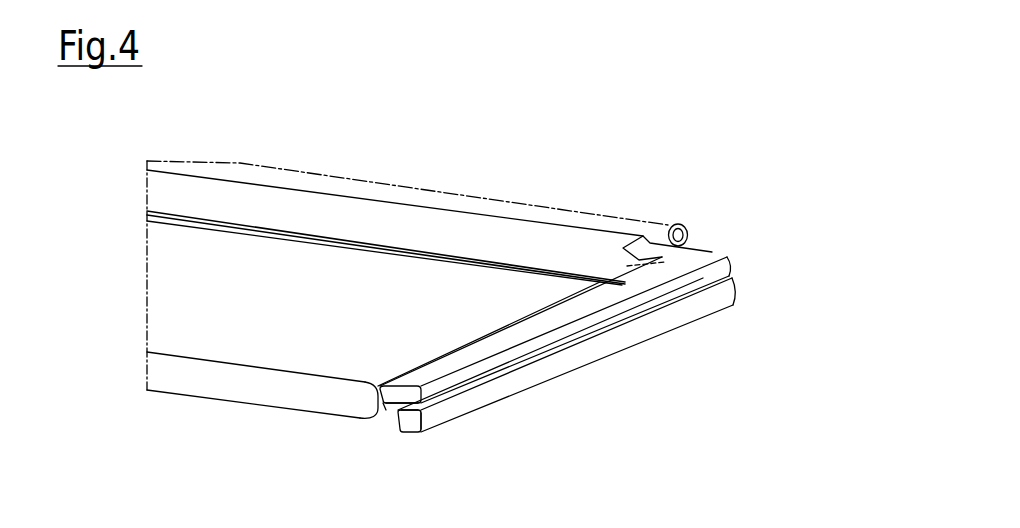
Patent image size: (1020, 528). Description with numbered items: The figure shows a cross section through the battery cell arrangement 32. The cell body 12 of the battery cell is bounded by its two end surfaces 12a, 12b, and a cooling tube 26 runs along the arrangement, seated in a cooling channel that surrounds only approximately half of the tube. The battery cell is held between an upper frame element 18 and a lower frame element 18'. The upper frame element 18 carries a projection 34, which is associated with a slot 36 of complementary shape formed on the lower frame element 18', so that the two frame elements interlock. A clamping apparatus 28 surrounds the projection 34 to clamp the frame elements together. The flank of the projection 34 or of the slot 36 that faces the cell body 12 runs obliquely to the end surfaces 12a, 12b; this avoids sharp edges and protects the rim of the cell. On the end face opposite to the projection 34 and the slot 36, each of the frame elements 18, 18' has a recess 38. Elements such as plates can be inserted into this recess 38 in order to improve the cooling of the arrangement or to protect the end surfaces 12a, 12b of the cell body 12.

The cell body 12 is at (120, 364).
The end surface 12a is at (252, 407).
The end surface 12b is at (190, 270).
The cooling tube 26 is at (520, 212).
The battery cell arrangement 32 is at (753, 152).
The upper frame element 18 is at (598, 290).
The lower frame element 18' is at (609, 330).
The recess 38 is at (380, 447).
The projection 34 is at (383, 422).
The slot 36 is at (406, 444).
The clamping apparatus 28 is at (434, 443).